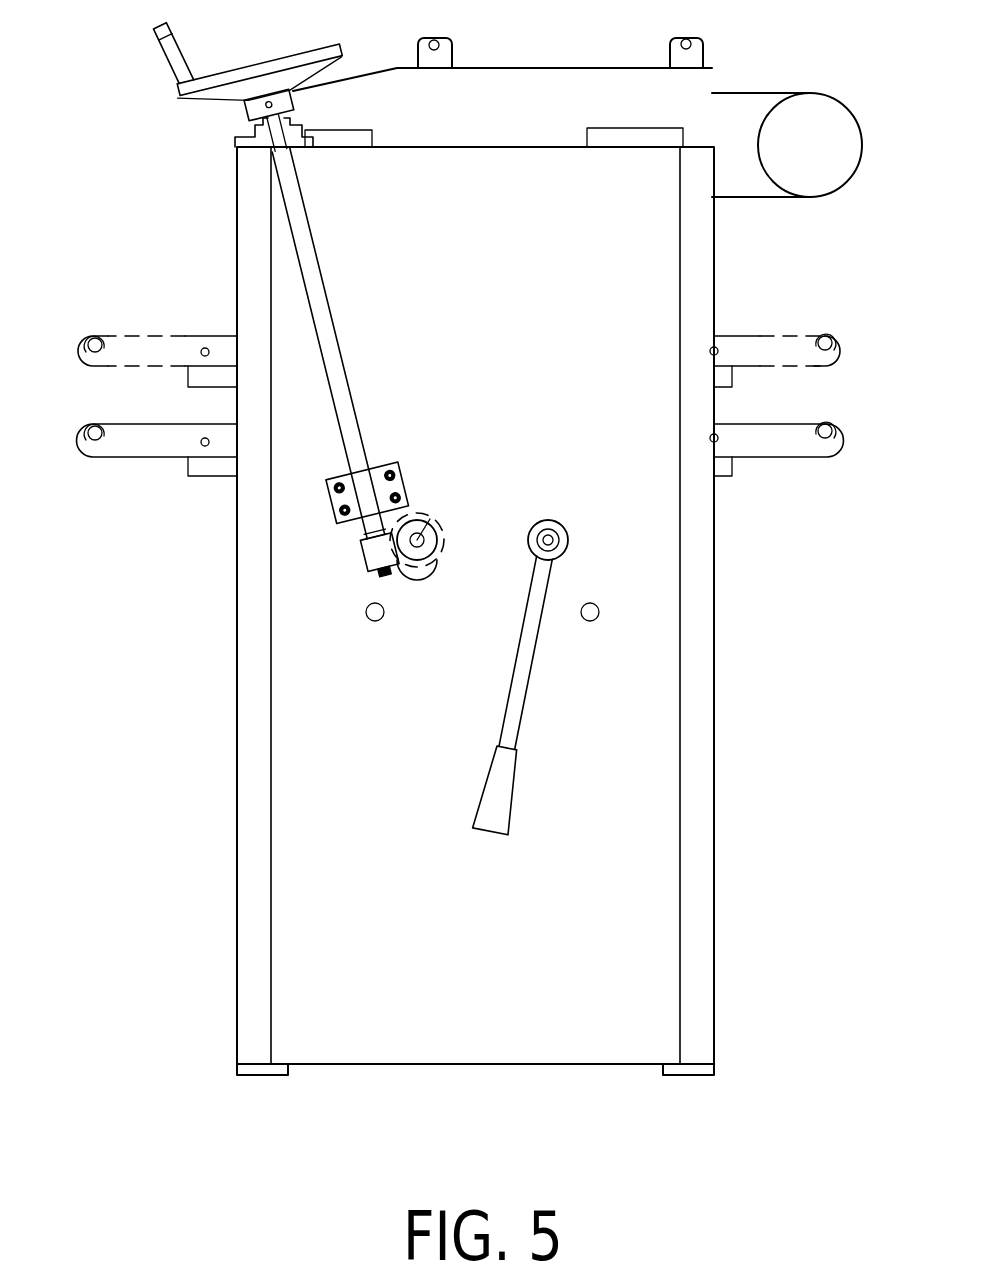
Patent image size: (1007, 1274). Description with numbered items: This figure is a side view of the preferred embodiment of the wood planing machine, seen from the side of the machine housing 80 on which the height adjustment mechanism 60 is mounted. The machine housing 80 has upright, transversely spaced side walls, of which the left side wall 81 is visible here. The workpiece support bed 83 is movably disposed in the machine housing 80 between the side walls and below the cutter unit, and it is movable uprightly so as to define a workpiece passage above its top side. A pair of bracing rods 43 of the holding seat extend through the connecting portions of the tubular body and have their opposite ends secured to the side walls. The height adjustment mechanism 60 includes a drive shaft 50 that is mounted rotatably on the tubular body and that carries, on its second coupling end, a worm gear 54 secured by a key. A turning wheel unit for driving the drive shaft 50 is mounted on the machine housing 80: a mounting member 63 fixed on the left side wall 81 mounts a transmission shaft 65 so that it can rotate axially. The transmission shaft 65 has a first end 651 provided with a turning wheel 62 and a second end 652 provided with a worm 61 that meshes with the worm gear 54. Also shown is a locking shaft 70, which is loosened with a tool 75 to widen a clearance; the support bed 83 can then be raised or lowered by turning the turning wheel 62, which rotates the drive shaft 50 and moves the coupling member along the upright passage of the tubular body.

The bracing rods 43 is at (367, 618).
The drive shaft 50 is at (432, 517).
The worm gear 54 is at (426, 578).
The height adjustment mechanism 60 is at (268, 340).
The worm 61 is at (370, 548).
The turning wheel 62 is at (178, 97).
The mounting member 63 is at (332, 508).
The transmission shaft 65 is at (322, 315).
The first end 651 is at (282, 158).
The second end 652 is at (360, 532).
The locking shaft 70 is at (575, 530).
The tool 75 is at (520, 690).
The machine housing 80 is at (718, 858).
The left side wall 81 is at (633, 947).
The workpiece support bed 83 is at (222, 343).